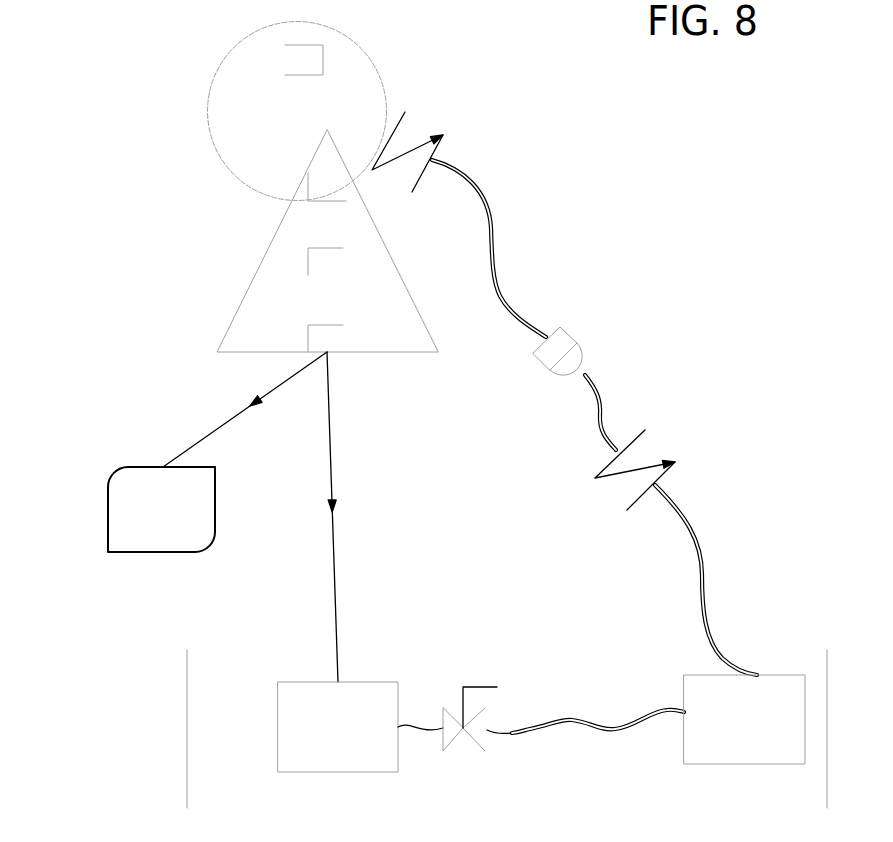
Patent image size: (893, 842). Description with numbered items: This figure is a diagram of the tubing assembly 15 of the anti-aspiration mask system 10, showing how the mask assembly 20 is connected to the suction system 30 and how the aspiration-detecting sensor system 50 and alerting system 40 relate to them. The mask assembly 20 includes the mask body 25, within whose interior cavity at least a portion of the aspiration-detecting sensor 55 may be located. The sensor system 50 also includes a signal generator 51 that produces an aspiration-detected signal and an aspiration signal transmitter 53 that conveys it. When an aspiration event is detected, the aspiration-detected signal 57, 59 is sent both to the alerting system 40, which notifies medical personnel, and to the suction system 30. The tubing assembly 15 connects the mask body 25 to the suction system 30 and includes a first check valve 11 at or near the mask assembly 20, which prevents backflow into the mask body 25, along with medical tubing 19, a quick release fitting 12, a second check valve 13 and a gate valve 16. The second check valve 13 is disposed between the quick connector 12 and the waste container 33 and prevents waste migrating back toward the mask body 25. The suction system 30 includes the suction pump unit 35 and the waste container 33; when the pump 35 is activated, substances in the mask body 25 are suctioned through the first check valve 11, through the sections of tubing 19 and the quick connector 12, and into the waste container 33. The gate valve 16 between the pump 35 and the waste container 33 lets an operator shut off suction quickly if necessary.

The anti-aspiration mask system 10 is at (105, 82).
The first check valve 11 is at (422, 130).
The quick release fitting 12 is at (563, 355).
The second check valve 13 is at (642, 452).
The tubing assembly 15 is at (640, 127).
The gate valve 16 is at (465, 690).
The medical tubing 19 is at (515, 312).
The mask assembly 20 is at (207, 112).
The mask body 25 is at (323, 57).
The suction system 30 is at (507, 650).
The waste container 33 is at (772, 675).
The suction pump unit 35 is at (278, 727).
The alerting system 40 is at (165, 552).
The aspiration-detecting sensor system 50 is at (270, 242).
The signal generator 51 is at (347, 260).
The aspiration signal transmitter 53 is at (347, 337).
The aspiration-detecting sensor 55 is at (346, 201).
The aspiration-detected signal 57 is at (198, 438).
The aspiration-detected signal 59 is at (337, 563).